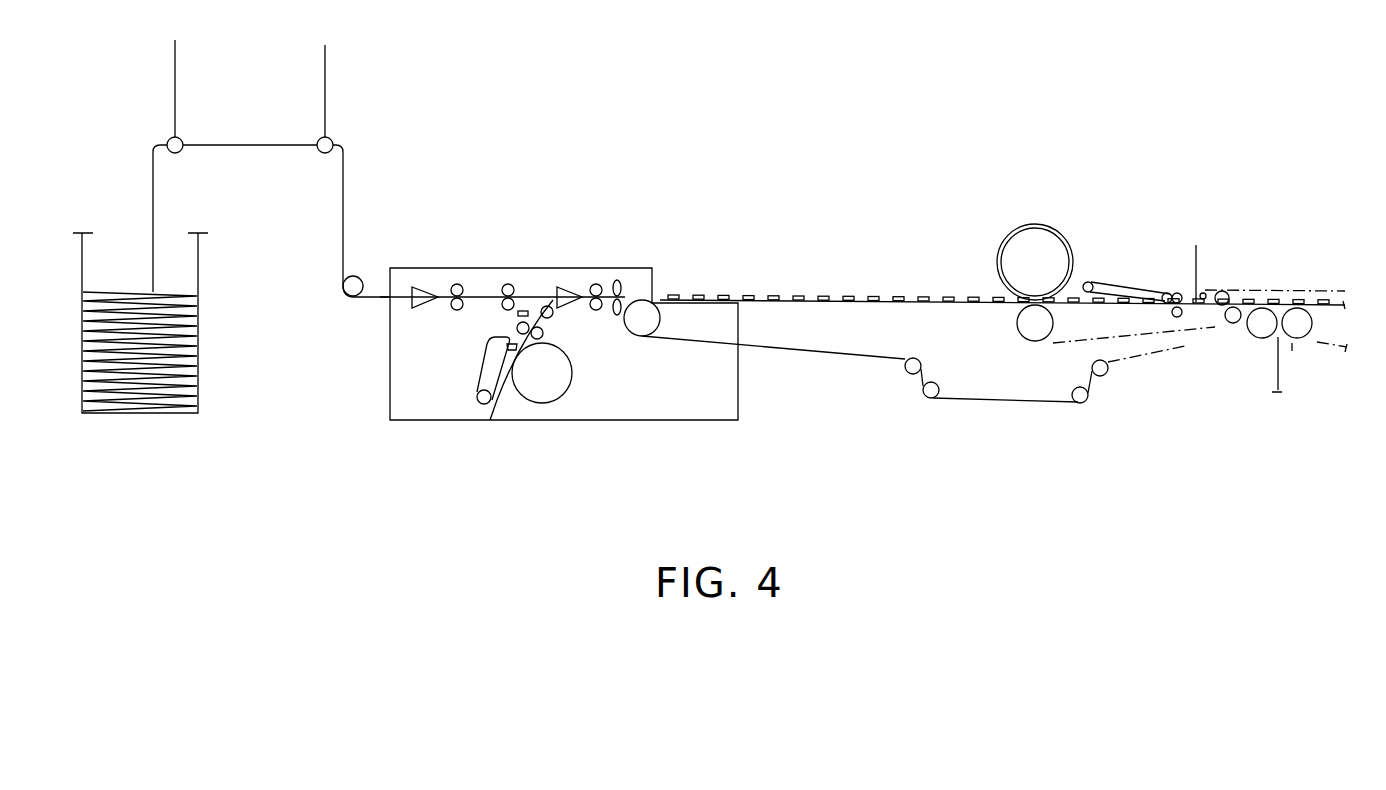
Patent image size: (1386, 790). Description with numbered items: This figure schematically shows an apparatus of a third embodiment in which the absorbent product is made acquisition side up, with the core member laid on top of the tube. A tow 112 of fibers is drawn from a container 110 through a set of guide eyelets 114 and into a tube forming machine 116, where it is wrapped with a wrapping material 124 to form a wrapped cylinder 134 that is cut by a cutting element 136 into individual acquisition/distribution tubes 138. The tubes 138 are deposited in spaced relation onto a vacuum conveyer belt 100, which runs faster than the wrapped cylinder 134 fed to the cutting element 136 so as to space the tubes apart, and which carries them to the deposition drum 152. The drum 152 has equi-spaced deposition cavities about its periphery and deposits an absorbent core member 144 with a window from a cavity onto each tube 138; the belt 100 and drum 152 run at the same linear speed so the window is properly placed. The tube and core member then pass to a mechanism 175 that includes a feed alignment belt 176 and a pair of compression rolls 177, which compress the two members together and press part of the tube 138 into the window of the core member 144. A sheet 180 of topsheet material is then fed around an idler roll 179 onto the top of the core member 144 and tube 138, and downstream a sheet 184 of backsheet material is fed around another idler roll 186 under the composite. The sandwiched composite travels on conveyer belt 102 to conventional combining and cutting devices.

The vacuum conveyer belt 100 is at (780, 348).
The conveyer belt 102 is at (1313, 343).
The container 110 is at (147, 413).
The tow of fibers 112 is at (152, 192).
The guide eyelets 114 is at (168, 143).
The tube forming machine 116 is at (436, 439).
The wrapping material 124 is at (490, 420).
The wrapped cylinder 134 is at (587, 290).
The cutting element 136 is at (620, 298).
The acquisition/distribution tube 138 is at (668, 297).
The absorbent core member 144 is at (1073, 298).
The deposition drum 152 is at (1008, 240).
The mechanism 175 is at (1161, 272).
The feed alignment belt 176 is at (1112, 283).
The compression rolls 177 is at (1172, 293).
The idler roll 179 is at (1207, 293).
The sheet of topsheet material 180 is at (1230, 287).
The sheet of backsheet material 184 is at (1273, 337).
The idler roll 186 is at (1285, 353).